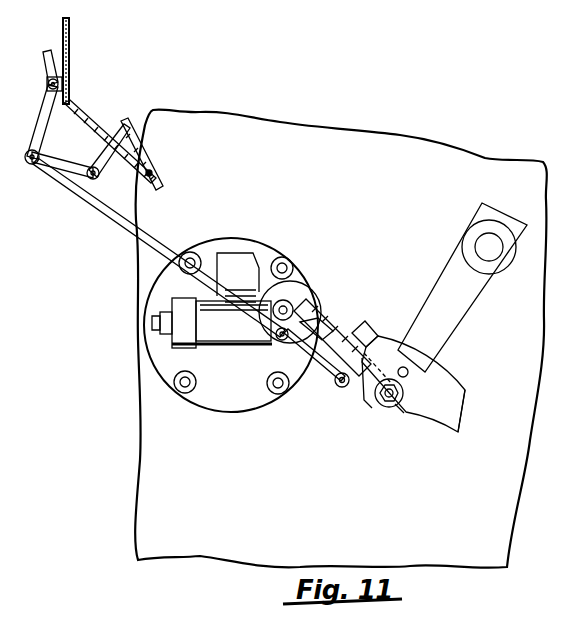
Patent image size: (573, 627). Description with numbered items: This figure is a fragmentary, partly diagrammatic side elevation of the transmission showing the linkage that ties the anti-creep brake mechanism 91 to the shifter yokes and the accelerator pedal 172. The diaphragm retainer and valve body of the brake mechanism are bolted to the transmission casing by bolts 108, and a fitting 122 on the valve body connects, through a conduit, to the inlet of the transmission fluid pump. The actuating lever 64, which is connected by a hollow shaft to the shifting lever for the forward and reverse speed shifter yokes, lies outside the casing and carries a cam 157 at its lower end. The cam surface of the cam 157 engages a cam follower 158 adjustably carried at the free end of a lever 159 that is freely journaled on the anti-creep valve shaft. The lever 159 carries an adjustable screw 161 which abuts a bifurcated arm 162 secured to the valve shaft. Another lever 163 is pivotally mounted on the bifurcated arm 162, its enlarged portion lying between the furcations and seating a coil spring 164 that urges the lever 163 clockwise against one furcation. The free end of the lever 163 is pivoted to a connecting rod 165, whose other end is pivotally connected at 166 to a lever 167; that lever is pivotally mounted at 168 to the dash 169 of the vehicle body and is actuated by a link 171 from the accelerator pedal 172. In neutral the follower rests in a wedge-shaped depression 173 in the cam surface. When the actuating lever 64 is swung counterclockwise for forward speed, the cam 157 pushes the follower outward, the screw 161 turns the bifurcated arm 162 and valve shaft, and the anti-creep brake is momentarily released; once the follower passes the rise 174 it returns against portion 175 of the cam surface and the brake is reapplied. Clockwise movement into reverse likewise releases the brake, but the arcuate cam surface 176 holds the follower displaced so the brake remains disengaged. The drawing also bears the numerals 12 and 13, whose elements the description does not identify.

The mounting panel 12 is at (470, 165).
The bolt 13 is at (273, 272).
The actuating lever 64 is at (478, 298).
The anti-creep brake mechanism 91 is at (247, 241).
The bolts 108 is at (285, 395).
The fitting 122 is at (160, 328).
The cam 157 is at (444, 388).
The cam follower 158 is at (387, 410).
The lever 159 is at (340, 333).
The adjustable screw 161 is at (302, 292).
The bifurcated arm 162 is at (257, 350).
The lever 163 is at (289, 389).
The coil spring 164 is at (326, 318).
The connecting rod 165 is at (135, 222).
The pivotal connection 166 is at (33, 165).
The lever 167 is at (41, 130).
The pivotal mounting 168 is at (64, 84).
The dash 169 is at (69, 53).
The link 171 is at (106, 164).
The accelerator pedal 172 is at (141, 142).
The wedge-shaped depression 173 is at (400, 413).
The rise 174 is at (365, 398).
The portion of the cam surface 175 is at (377, 333).
The arcuate cam surface 176 is at (448, 432).